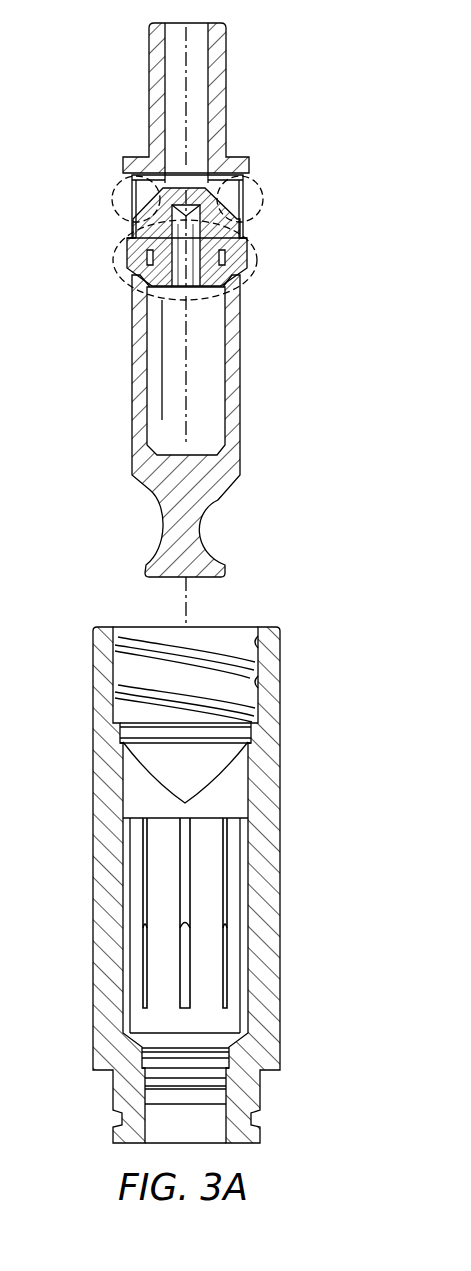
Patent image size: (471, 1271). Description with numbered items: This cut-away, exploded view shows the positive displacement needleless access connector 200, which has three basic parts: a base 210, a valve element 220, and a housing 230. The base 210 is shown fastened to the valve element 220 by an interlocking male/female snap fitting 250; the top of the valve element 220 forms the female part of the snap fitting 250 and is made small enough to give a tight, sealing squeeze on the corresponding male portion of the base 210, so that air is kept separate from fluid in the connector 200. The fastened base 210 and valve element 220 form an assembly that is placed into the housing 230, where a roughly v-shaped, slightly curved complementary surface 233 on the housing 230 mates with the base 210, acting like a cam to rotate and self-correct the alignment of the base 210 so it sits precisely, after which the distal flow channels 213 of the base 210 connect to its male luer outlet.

The connector 200 is at (296, 55).
The base 210 is at (147, 108).
The distal flow channels 213 is at (114, 195).
The snap fitting 250 is at (259, 250).
The valve element 220 is at (132, 360).
The housing 230 is at (93, 807).
The complementary surface 233 is at (248, 790).